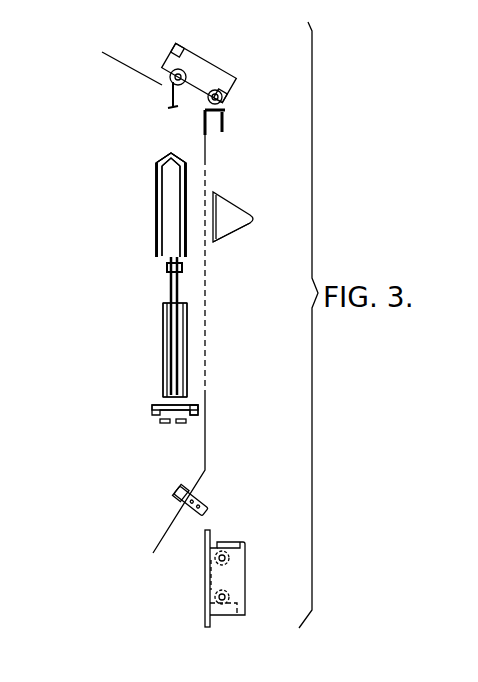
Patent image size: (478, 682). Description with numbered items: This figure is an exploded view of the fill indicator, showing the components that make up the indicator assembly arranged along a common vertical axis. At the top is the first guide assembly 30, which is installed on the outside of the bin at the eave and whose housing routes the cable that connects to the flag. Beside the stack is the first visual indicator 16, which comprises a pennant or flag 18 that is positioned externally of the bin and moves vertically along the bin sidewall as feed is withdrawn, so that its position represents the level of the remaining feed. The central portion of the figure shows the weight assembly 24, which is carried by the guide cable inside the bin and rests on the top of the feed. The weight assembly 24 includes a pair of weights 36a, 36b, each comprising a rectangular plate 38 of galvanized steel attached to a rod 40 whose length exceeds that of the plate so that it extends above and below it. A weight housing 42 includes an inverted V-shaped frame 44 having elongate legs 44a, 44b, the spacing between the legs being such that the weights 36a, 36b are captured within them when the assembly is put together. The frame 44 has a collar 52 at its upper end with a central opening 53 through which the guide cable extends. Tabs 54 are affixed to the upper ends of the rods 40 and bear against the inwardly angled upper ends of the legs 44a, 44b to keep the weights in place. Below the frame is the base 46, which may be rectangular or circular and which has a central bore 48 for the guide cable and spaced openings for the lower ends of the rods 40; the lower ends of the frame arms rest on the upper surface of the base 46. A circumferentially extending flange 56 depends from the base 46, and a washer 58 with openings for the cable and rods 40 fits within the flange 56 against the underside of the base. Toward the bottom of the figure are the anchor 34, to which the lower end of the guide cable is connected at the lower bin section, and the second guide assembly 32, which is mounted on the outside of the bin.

The first visual indicator 16 is at (253, 200).
The pennant or flag 18 is at (222, 239).
The weight assembly 24 is at (90, 358).
The first guide assembly 30 is at (262, 38).
The second guide assembly 32 is at (252, 567).
The anchor 34 is at (168, 510).
The weight 36a is at (160, 312).
The weight 36b is at (188, 320).
The rectangular plate 38 is at (167, 357).
The rod 40 is at (188, 289).
The weight housing 42 is at (140, 155).
The inverted V-shaped frame 44 is at (186, 177).
The leg 44a is at (158, 227).
The leg 44b is at (181, 188).
The base 46 is at (212, 400).
The central bore 48 is at (170, 408).
The collar 52 is at (189, 136).
The central opening 53 is at (170, 155).
The tabs 54 is at (168, 268).
The circumferentially extending flange 56 is at (196, 412).
The washer 58 is at (165, 422).